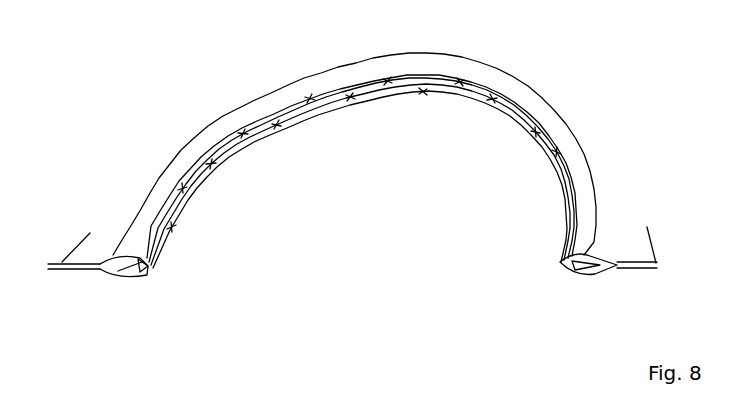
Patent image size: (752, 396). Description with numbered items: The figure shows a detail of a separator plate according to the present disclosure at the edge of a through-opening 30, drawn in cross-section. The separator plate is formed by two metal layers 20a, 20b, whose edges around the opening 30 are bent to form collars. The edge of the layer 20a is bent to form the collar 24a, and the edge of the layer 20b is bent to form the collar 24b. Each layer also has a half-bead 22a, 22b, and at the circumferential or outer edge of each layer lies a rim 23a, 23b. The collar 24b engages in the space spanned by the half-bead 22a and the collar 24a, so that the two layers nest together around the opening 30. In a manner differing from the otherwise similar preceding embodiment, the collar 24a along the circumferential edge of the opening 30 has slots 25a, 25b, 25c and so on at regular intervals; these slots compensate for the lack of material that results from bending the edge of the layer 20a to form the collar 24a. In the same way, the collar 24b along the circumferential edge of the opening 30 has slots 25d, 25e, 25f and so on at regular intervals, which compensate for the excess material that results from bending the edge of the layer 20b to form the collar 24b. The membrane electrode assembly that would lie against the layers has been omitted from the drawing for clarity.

The metal layer 20a is at (77, 270).
The metal layer 20b is at (80, 262).
The half-bead 22a is at (120, 273).
The half-bead 22b is at (113, 253).
The rim 23a is at (147, 273).
The rim 23b is at (267, 113).
The collar 24a is at (203, 187).
The collar 24b is at (170, 210).
The slot 25a is at (172, 227).
The slot 25b is at (213, 167).
The slot 25c is at (277, 127).
The slot 25d is at (183, 190).
The slot 25e is at (243, 133).
The slot 25f is at (308, 95).
The through-opening 30 is at (425, 173).